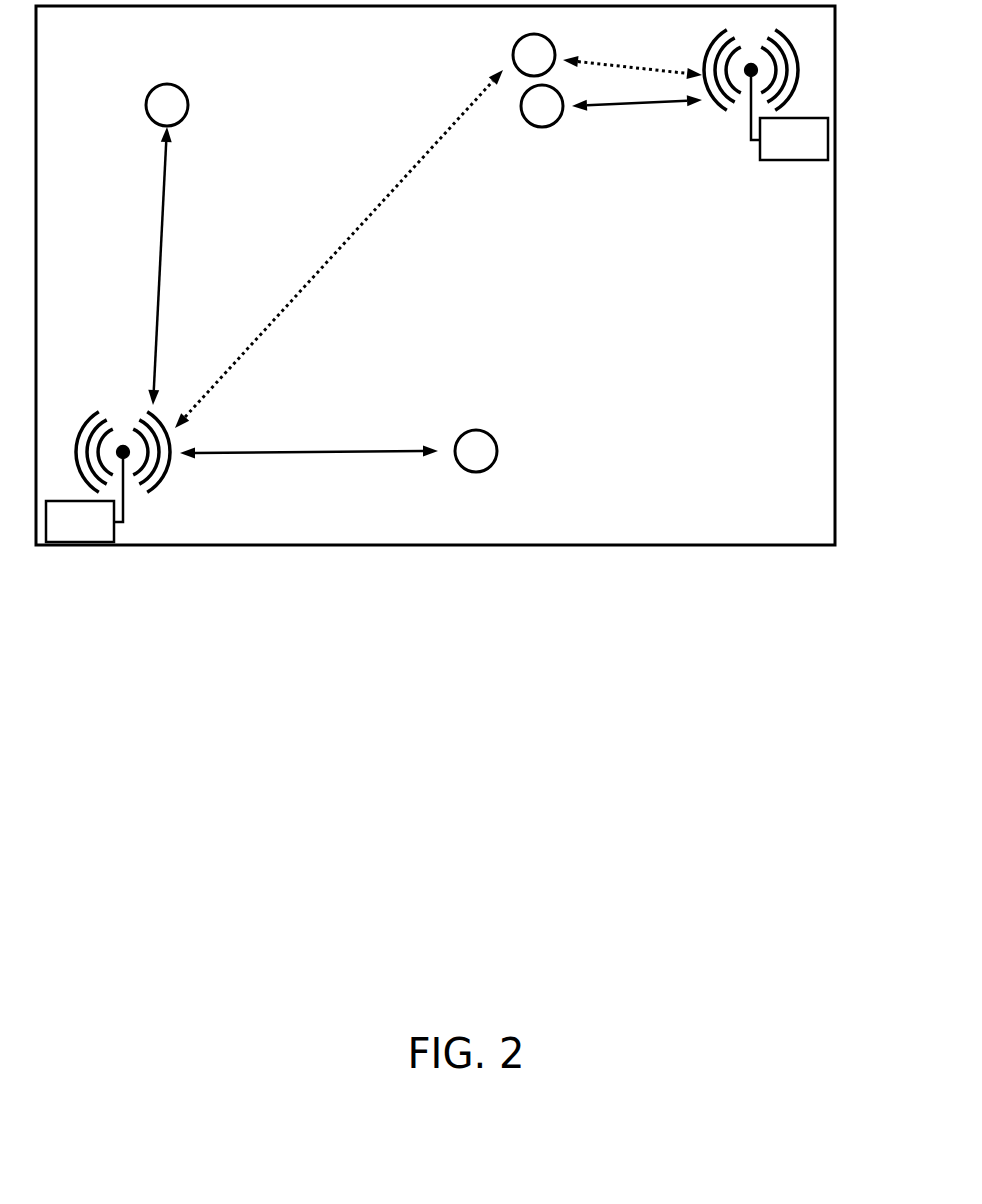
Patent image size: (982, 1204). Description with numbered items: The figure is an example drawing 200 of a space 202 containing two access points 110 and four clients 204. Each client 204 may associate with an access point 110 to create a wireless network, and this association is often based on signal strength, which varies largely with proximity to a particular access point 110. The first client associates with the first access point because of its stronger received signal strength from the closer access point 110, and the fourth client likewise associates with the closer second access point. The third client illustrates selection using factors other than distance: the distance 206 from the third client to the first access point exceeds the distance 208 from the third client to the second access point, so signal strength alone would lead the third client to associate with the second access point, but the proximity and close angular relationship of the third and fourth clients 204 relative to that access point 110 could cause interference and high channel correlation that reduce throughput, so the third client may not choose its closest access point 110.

The example drawing 200 is at (483, 1022).
The space 202 is at (735, 546).
The clients 204 is at (164, 84).
The distance 206 is at (345, 240).
The distance 208 is at (623, 66).
The access points 110 is at (91, 542).